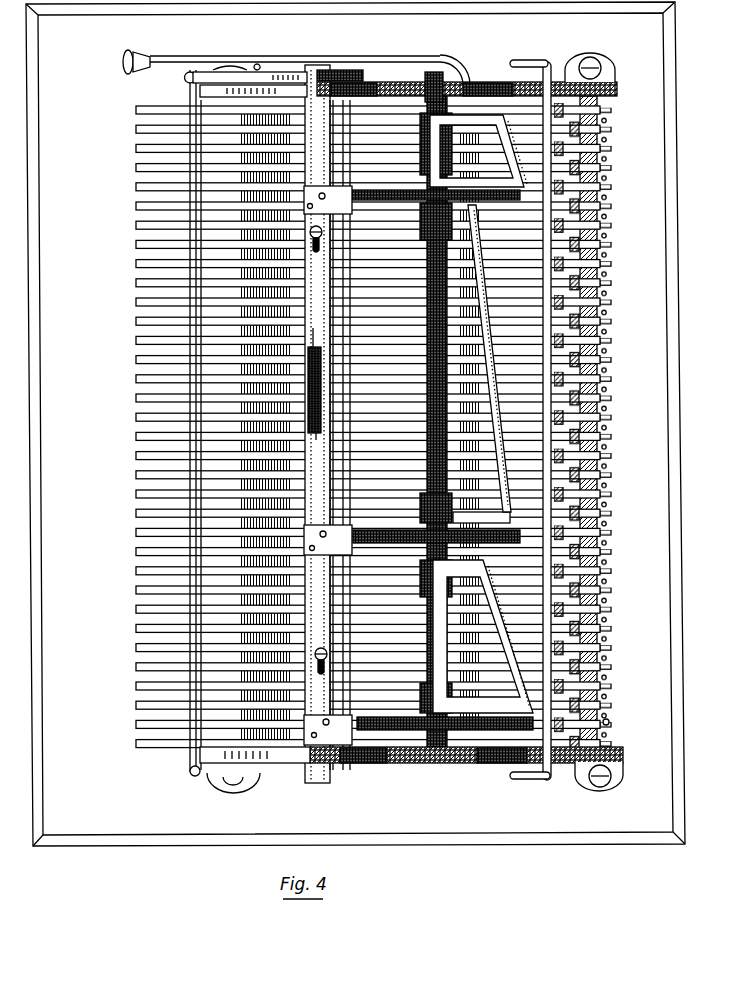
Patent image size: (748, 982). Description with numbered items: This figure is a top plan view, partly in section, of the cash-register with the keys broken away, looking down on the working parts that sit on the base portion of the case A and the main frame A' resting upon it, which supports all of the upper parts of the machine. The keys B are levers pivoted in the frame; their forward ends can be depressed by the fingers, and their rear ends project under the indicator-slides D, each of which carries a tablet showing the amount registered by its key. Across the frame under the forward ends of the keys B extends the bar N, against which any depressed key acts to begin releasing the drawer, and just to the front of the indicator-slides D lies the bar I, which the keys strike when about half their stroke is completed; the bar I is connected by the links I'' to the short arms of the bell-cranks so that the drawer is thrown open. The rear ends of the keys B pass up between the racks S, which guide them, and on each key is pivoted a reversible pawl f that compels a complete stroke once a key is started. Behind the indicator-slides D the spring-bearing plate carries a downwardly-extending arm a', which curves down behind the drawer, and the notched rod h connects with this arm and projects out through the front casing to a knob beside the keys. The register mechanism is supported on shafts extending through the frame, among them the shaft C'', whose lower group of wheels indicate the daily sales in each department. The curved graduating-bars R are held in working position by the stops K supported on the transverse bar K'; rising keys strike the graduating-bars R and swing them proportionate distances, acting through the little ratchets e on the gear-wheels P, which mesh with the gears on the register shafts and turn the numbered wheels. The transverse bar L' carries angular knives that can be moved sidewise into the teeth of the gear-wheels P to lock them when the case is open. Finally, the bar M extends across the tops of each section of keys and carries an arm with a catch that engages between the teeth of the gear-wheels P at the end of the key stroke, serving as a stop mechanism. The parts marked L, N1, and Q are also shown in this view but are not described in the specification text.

The base portion of the case A is at (355, 424).
The main frame A' is at (477, 422).
The downwardly-extending arm a' is at (433, 423).
The keys B is at (147, 693).
The shaft C'' is at (447, 66).
The indicator-slides D is at (577, 470).
The ratchets e is at (520, 194).
The pawl f is at (613, 720).
The rod h is at (281, 55).
The bar I is at (552, 407).
The links I'' is at (530, 419).
The stops K is at (538, 414).
The transverse bar K' is at (583, 429).
The rail L is at (231, 435).
The transverse bar L' is at (317, 424).
The bar M is at (345, 158).
The bar N is at (196, 752).
The lug N1 is at (218, 778).
The gear-wheels P is at (606, 210).
The guide rails Q is at (307, 632).
The graduating-bars R is at (517, 151).
The racks S is at (328, 465).